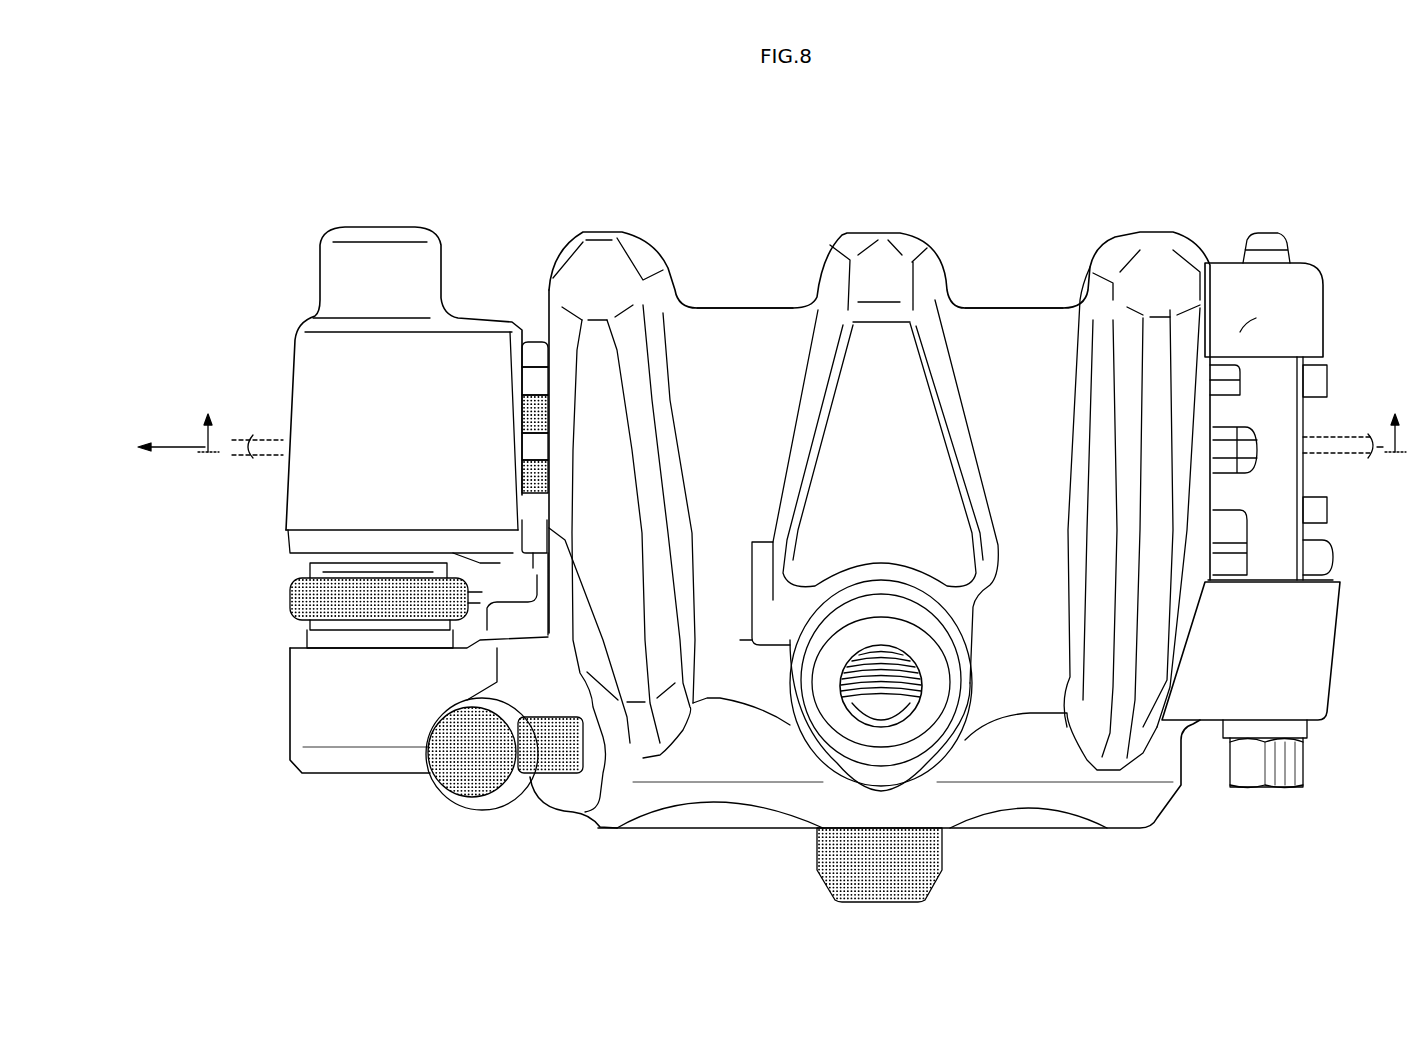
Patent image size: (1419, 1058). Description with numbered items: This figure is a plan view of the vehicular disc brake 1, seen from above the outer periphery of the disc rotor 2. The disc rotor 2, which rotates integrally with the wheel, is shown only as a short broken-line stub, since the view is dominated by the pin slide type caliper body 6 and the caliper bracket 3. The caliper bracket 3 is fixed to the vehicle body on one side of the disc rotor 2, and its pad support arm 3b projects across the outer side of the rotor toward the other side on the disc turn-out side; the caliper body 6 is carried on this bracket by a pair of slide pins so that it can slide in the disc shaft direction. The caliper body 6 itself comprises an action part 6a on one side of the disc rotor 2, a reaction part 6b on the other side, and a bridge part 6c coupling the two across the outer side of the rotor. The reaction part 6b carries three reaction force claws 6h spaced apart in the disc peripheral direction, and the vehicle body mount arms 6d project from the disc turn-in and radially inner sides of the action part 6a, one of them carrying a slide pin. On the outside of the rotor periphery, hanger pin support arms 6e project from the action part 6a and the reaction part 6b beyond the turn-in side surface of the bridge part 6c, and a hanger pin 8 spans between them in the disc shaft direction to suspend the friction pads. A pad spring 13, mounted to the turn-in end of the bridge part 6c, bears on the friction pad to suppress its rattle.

The vehicular disc brake 1 is at (797, 127).
The disc rotor 2 is at (1338, 458).
The caliper bracket 3 is at (287, 368).
The pad support arm 3b is at (305, 472).
The caliper body 6 is at (918, 234).
The action part 6a is at (1007, 818).
The reaction part 6b is at (1013, 313).
The bridge part 6c is at (940, 478).
The vehicle body mount arm 6d is at (313, 703).
The hanger pin support arm 6e is at (1303, 318).
The reaction force claw 6h is at (604, 246).
The hanger pin 8 is at (1253, 773).
The pad spring 13 is at (1292, 423).